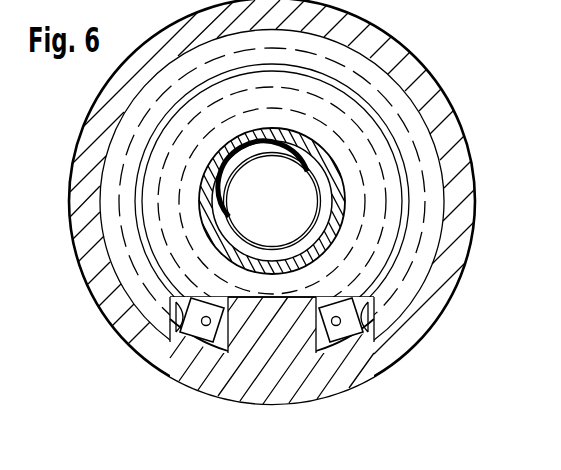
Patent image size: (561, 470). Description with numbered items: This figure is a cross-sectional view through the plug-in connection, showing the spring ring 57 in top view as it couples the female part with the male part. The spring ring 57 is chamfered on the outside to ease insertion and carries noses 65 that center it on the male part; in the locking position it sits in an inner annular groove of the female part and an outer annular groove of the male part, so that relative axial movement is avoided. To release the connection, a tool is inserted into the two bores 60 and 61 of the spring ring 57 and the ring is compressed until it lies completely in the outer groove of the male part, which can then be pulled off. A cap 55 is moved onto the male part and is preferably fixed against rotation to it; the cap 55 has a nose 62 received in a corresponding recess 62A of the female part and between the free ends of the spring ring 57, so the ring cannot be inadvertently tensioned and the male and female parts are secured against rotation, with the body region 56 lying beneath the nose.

The cap 55 is at (108, 300).
The support block 56 is at (255, 330).
The spring ring 57 is at (398, 202).
The bore 60 is at (204, 326).
The bore 61 is at (338, 326).
The nose 62 is at (280, 312).
The recess 62A is at (165, 343).
The noses 65 is at (350, 329).